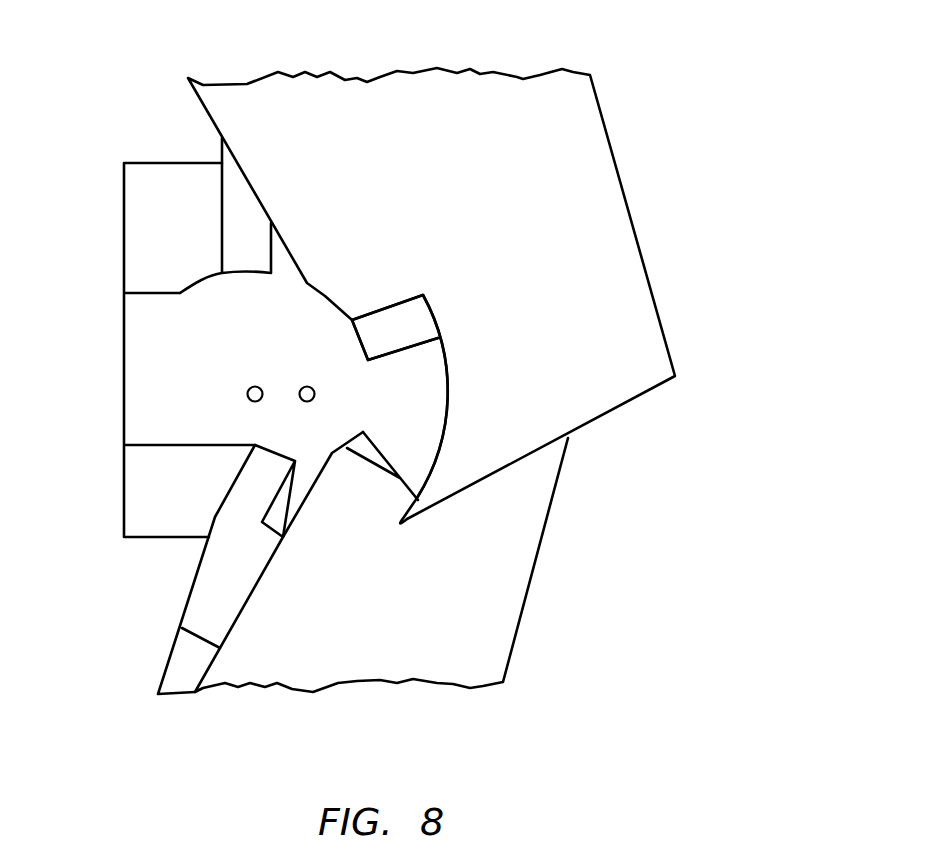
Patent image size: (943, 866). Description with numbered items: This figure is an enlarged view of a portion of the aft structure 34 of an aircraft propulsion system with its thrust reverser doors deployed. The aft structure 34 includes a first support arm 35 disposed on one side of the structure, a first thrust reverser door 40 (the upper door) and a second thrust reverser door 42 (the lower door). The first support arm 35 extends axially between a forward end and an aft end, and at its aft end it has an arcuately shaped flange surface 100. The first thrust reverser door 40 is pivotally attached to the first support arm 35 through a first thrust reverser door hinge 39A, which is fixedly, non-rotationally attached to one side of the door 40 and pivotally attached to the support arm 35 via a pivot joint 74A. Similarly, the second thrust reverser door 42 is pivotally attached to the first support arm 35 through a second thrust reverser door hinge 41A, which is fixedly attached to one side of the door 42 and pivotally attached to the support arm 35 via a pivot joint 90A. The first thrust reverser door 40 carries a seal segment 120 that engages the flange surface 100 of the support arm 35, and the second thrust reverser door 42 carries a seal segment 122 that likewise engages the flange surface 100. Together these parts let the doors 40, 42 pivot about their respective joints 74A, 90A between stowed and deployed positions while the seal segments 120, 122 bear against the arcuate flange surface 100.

The aft structure 34 is at (665, 95).
The first support arm 35 is at (147, 407).
The first thrust reverser door hinge 39A is at (233, 222).
The first thrust reverser door 40 is at (635, 228).
The second thrust reverser door hinge 41A is at (215, 577).
The second thrust reverser door 42 is at (515, 637).
The pivot joint 74A is at (245, 393).
The pivot joint 90A is at (305, 386).
The arcuately shaped flange surface 100 is at (412, 405).
The seal segment 120 is at (412, 325).
The seal segment 122 is at (400, 478).